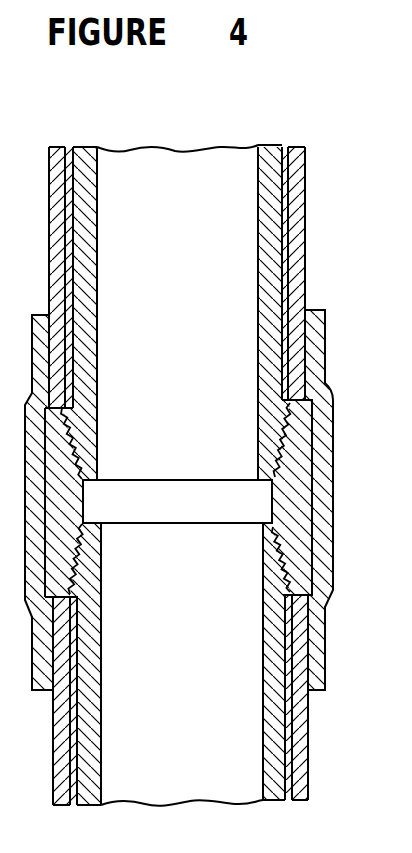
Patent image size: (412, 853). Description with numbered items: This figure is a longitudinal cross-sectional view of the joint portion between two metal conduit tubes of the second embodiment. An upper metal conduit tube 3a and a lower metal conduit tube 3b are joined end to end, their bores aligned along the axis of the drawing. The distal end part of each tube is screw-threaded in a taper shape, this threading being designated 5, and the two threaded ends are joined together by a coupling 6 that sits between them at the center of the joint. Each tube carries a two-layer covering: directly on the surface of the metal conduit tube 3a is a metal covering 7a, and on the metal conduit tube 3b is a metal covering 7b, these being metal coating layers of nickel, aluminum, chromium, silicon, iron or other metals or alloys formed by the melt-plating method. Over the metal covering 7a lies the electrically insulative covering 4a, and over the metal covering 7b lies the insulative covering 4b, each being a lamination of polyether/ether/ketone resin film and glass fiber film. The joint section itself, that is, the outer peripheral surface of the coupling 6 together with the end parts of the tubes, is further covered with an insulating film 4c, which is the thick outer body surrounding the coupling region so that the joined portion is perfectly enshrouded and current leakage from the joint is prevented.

The metal conduit tube 3a is at (263, 218).
The metal covering 7a is at (284, 260).
The insulative covering 4a is at (296, 291).
The insulating film 4c is at (322, 547).
The screw thread 5 is at (284, 432).
The coupling 6 is at (288, 497).
The metal conduit tube 3b is at (270, 756).
The metal covering 7b is at (288, 721).
The insulative covering 4b is at (299, 787).